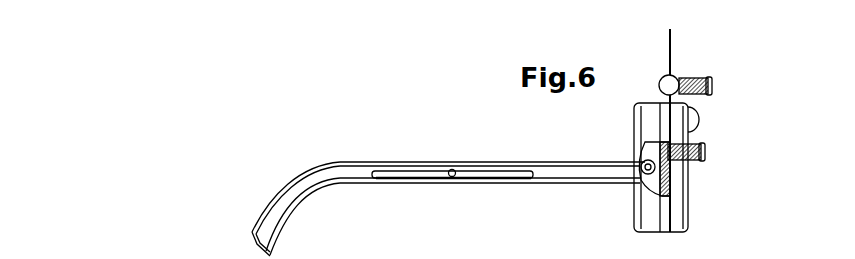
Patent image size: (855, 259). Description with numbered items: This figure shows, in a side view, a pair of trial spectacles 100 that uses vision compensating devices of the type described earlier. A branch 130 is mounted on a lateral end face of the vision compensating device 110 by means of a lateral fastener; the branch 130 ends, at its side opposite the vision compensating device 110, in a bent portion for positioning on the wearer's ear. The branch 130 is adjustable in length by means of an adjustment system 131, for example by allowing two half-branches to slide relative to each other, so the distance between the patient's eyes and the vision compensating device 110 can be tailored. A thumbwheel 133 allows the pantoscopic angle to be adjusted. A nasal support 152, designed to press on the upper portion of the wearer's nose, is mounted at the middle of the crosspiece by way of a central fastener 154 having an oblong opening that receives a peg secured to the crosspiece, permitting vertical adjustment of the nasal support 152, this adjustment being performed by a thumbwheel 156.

The pair of trial spectacles 100 is at (408, 117).
The vision compensating device 110 is at (676, 233).
The branch 130 is at (336, 166).
The adjustment system 131 is at (452, 168).
The thumbwheel 133 is at (700, 143).
The nasal support 152 is at (652, 195).
The central fastener 154 is at (673, 46).
The thumbwheel 156 is at (708, 78).